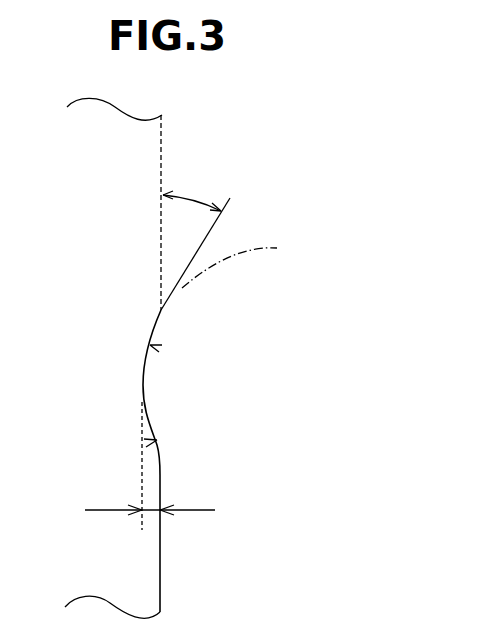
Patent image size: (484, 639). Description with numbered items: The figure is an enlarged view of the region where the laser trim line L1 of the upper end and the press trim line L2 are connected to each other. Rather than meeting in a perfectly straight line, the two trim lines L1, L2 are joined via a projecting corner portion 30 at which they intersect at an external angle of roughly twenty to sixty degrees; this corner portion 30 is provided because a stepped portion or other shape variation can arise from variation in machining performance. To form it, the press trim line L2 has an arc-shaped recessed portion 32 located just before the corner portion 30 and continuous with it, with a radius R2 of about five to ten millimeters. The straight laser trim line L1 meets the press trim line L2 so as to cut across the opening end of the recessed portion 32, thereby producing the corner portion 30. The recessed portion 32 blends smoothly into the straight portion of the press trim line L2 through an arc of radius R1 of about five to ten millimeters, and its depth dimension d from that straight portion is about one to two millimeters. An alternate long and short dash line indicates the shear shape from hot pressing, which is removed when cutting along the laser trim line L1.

The corner portion 30 is at (163, 313).
The recessed portion 32 is at (143, 378).
The laser trim line L1 is at (163, 160).
The press trim line L2 is at (160, 547).
The radius R1 is at (157, 440).
The radius R2 is at (150, 345).
The depth dimension d is at (150, 466).